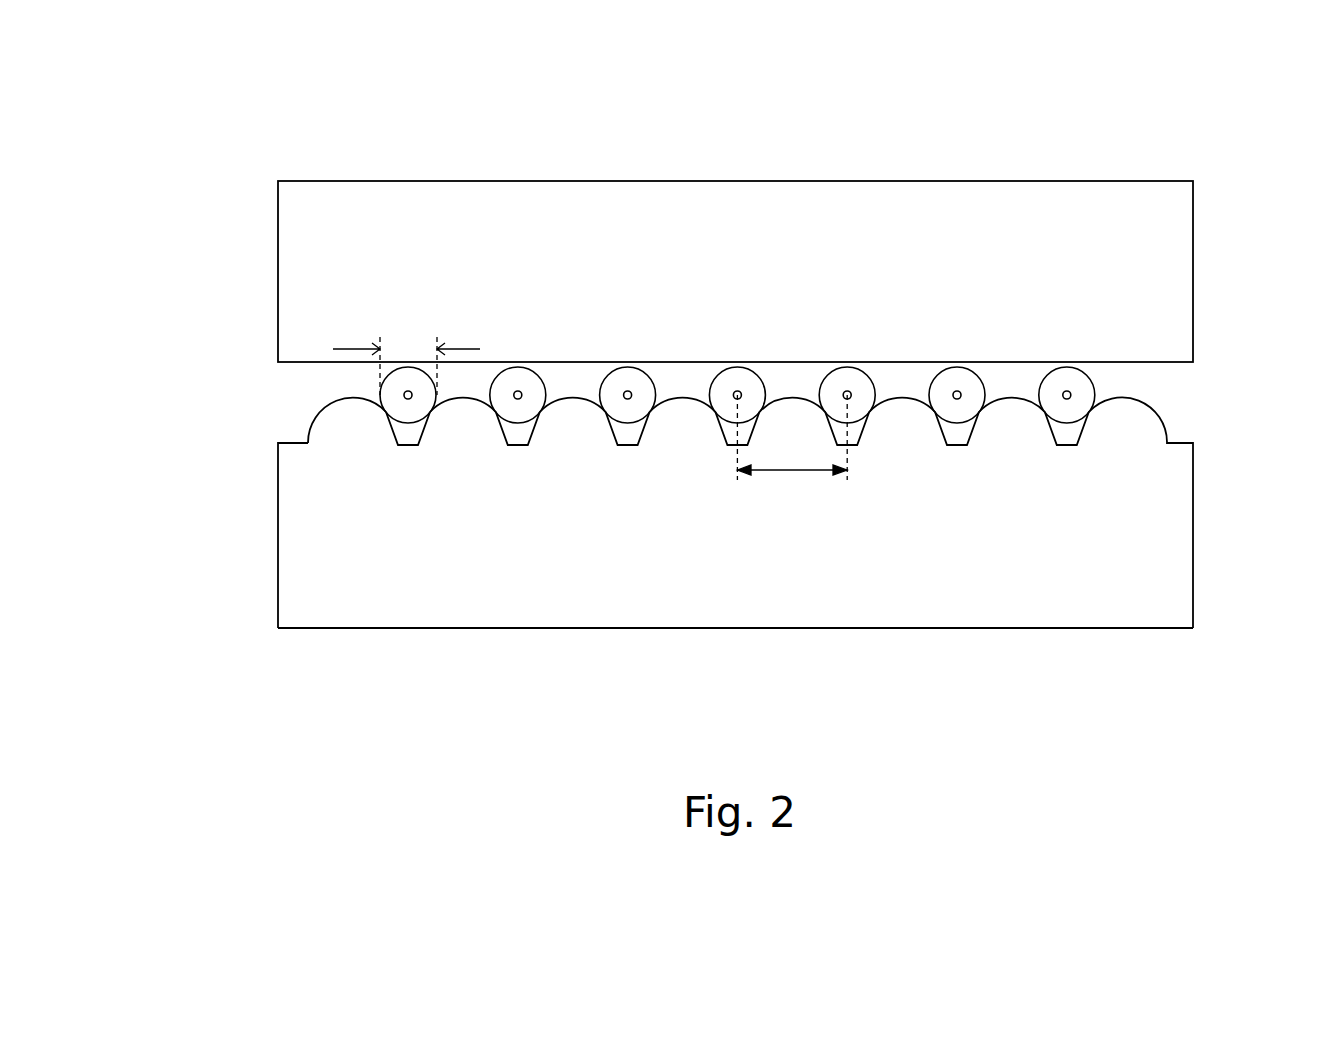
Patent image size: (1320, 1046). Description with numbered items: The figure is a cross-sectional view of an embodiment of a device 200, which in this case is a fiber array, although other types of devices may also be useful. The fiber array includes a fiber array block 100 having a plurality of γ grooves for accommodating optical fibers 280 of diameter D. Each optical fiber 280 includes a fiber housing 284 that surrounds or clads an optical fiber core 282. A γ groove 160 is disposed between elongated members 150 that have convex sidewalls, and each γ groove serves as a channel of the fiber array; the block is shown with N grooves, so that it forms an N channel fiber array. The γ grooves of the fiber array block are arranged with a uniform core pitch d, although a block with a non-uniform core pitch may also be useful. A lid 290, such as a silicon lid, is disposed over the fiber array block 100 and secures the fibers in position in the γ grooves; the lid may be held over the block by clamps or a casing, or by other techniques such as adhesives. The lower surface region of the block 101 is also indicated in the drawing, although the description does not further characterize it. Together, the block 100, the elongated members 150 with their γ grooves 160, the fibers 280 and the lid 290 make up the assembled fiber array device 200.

The fiber array block 100 is at (655, 552).
The substrate bottom surface 101 is at (1167, 600).
The elongated member 150 is at (353, 423).
The γ groove 160 is at (412, 433).
The device 200 is at (704, 407).
The optical fiber 280 is at (948, 375).
The optical fiber core 282 is at (1071, 395).
The fiber housing 284 is at (1058, 375).
The lid 290 is at (818, 179).